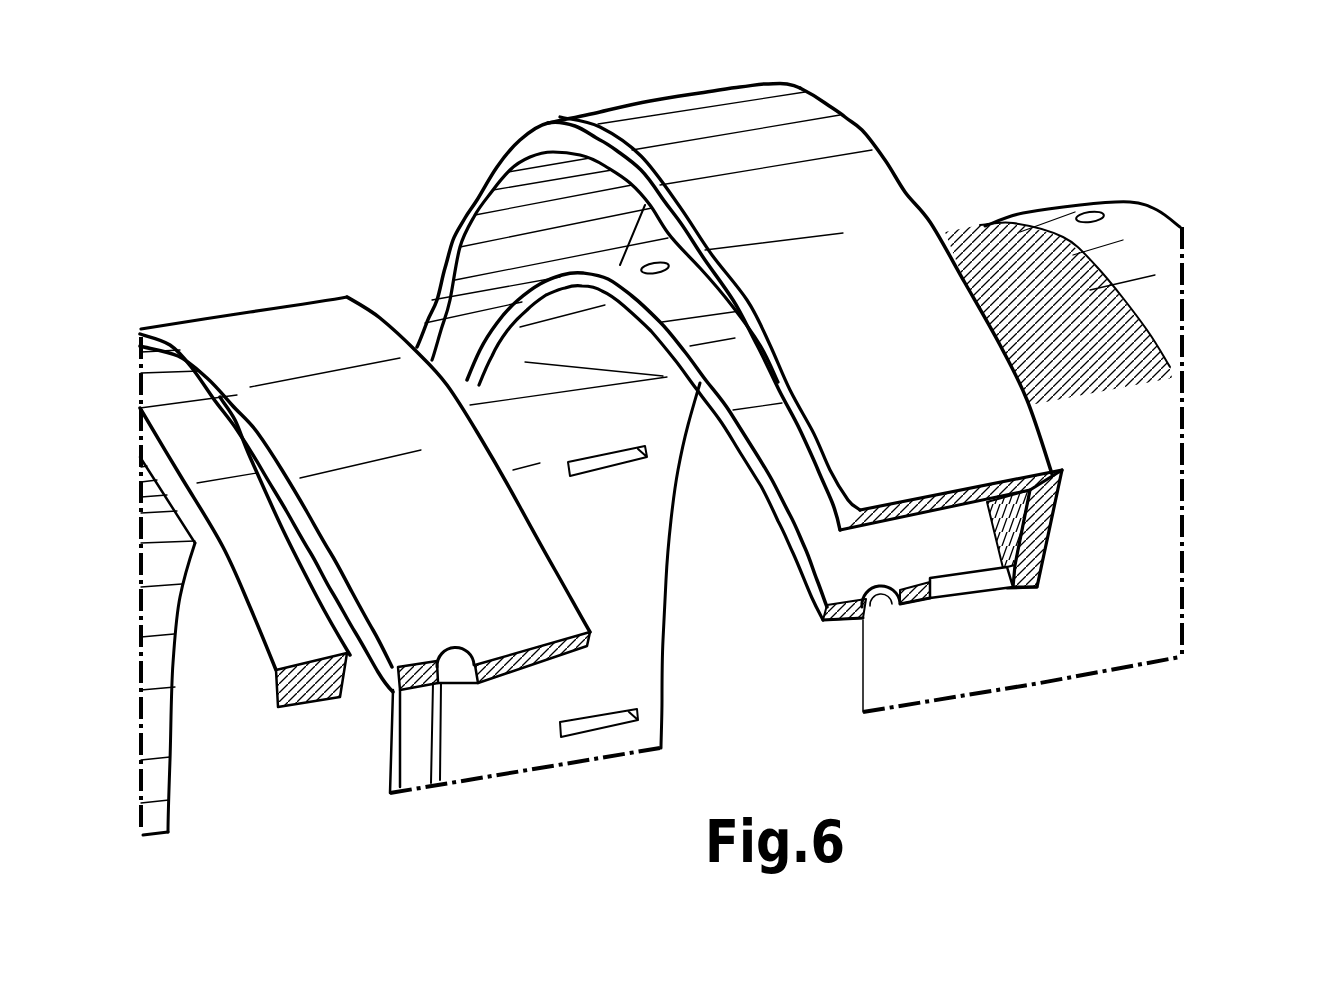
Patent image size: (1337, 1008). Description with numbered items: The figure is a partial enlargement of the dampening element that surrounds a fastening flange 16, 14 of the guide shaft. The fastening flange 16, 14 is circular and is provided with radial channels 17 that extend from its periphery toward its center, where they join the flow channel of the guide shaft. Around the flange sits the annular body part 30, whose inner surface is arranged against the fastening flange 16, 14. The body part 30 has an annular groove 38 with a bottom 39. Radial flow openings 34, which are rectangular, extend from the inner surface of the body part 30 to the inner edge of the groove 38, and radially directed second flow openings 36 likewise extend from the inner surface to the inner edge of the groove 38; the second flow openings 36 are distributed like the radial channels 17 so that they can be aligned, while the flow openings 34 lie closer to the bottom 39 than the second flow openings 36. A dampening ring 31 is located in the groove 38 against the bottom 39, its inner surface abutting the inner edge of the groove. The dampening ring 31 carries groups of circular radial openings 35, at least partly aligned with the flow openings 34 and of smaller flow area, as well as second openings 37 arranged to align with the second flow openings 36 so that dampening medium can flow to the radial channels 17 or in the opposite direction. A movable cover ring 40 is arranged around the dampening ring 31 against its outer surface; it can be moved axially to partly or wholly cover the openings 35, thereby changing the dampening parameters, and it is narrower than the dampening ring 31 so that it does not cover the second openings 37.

The first fastening flange 16 is at (738, 518).
The second fastening flange 14 is at (1093, 423).
The radial channel 17 is at (1088, 211).
The annular body part 30 is at (873, 187).
The dampening ring 31 is at (348, 322).
The radial flow opening 34 is at (975, 585).
The radial opening 35 is at (573, 653).
The second flow opening 36 is at (880, 604).
The second opening 37 is at (478, 672).
The annular groove 38 is at (877, 547).
The bottom of the groove 39 is at (1058, 521).
The movable cover ring 40 is at (317, 695).